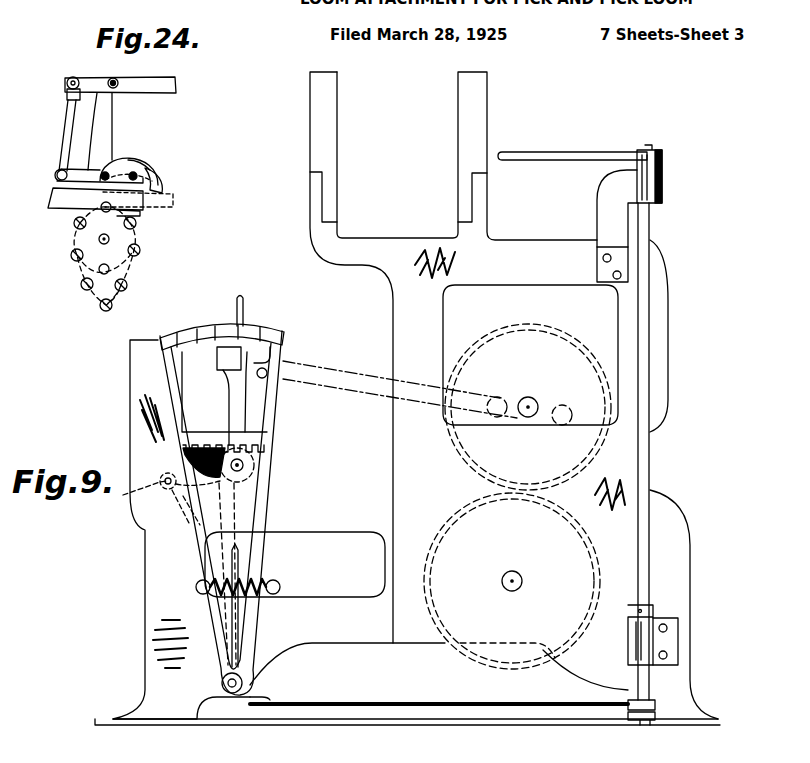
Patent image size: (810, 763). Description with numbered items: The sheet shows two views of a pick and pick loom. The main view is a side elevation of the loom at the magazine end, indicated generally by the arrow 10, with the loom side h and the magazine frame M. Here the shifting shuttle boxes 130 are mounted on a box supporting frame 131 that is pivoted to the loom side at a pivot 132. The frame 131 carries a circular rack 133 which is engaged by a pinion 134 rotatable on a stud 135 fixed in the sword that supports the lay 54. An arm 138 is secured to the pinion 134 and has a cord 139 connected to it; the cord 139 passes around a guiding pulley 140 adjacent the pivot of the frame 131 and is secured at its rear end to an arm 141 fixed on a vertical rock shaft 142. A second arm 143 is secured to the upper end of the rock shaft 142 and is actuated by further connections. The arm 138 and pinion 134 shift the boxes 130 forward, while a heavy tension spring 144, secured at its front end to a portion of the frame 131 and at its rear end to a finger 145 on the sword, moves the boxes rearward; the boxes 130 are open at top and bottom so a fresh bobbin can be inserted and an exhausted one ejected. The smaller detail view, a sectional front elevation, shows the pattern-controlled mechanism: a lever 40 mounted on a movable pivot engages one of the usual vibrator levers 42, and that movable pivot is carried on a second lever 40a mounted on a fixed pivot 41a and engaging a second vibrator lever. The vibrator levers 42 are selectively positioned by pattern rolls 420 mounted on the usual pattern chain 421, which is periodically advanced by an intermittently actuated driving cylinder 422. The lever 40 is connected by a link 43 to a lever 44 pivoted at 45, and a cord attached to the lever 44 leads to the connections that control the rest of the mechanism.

In FIG. 24, the lever 44 is at (67, 80).
In FIG. 24, the pivot 45 is at (109, 79).
In FIG. 24, the link 43 is at (66, 139).
In FIG. 24, the lever 40 is at (132, 168).
In FIG. 24, the second lever 40a is at (169, 179).
In FIG. 24, the fixed pivot 41a is at (152, 168).
In FIG. 24, the vibrator lever 42 is at (160, 208).
In FIG. 24, the driving cylinder 422 is at (74, 232).
In FIG. 24, the pattern roll 420 is at (132, 282).
In FIG. 24, the pattern chain 421 is at (112, 305).
In FIG. 9, the loom mechanism 10 is at (84, 399).
In FIG. 9, the loom frame h is at (145, 632).
In FIG. 9, the arm 138 is at (127, 495).
In FIG. 9, the box supporting frame 131 is at (272, 413).
In FIG. 9, the shifting shuttle boxes 130 is at (220, 316).
In FIG. 9, the magazine frame M is at (181, 330).
In FIG. 9, the lay 54 is at (225, 365).
In FIG. 9, the circular rack 133 is at (263, 441).
In FIG. 9, the pinion 134 is at (250, 477).
In FIG. 9, the stud 135 is at (245, 465).
In FIG. 9, the tension spring 144 is at (254, 559).
In FIG. 9, the finger 145 is at (278, 583).
In FIG. 9, the pivot 132 is at (243, 681).
In FIG. 9, the guiding pulley 140 is at (238, 694).
In FIG. 9, the cord 139 is at (311, 704).
In FIG. 9, the vertical rock shaft 142 is at (645, 512).
In FIG. 9, the second arm 143 is at (571, 159).
In FIG. 9, the arm 141 is at (655, 710).